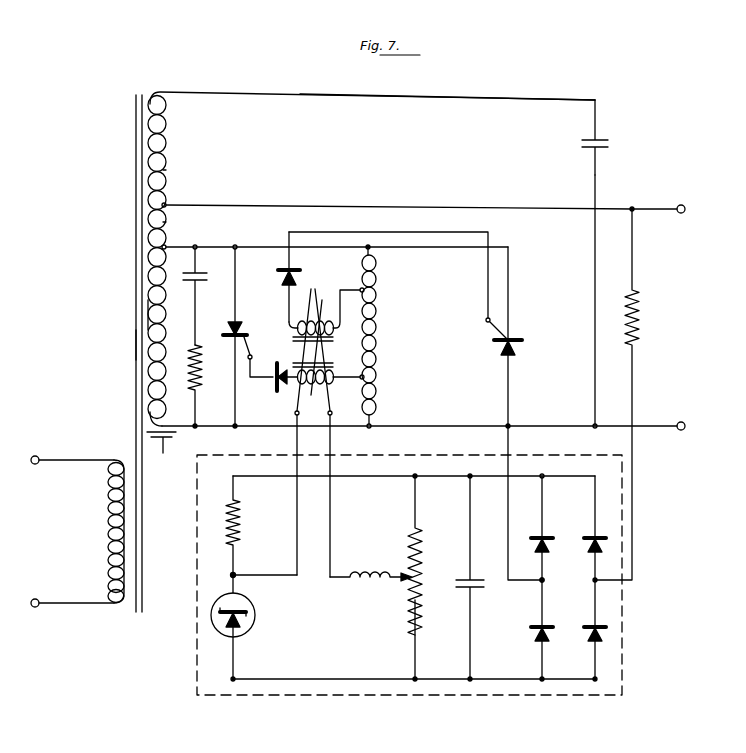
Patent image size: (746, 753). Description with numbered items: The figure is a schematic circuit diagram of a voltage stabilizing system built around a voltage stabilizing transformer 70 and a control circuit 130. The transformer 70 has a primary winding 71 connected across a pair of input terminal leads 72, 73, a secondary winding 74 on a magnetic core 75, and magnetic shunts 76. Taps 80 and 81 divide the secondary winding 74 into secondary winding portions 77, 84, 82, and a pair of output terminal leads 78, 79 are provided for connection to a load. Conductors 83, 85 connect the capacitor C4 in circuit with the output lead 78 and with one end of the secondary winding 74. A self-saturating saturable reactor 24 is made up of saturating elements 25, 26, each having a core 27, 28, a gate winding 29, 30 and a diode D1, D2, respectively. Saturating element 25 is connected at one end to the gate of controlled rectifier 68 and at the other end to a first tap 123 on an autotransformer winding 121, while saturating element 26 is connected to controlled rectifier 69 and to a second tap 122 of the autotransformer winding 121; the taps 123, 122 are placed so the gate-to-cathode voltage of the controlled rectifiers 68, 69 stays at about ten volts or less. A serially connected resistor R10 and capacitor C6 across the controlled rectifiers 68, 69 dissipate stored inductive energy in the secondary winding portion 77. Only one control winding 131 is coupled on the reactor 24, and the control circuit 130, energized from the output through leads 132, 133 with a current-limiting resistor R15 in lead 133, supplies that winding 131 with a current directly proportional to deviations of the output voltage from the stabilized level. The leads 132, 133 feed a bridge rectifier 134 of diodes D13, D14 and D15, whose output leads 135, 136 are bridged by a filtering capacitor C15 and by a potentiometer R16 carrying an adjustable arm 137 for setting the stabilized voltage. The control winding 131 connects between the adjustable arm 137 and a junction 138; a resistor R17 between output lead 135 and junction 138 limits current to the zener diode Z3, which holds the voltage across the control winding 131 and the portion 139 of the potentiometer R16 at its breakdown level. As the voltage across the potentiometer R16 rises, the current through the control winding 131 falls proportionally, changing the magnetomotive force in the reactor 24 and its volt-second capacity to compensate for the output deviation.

The voltage stabilizing transformer 70 is at (132, 181).
The secondary winding 74 is at (168, 149).
The secondary winding portion 82 is at (166, 170).
The tap 81 is at (168, 204).
The secondary winding portion 84 is at (166, 224).
The tap 80 is at (168, 246).
The conductor 83 is at (466, 101).
The output terminal lead 79 is at (612, 208).
The conductor 85 is at (593, 278).
The controlled rectifier 69 is at (512, 337).
The output terminal lead 78 is at (540, 425).
The lead 132 is at (510, 444).
The lead 133 is at (626, 462).
The magnetic core 75 is at (134, 346).
The secondary winding portion 77 is at (162, 332).
The controlled rectifier 68 is at (240, 330).
The saturating element 26 is at (305, 300).
The self-saturating saturable reactor 24 is at (312, 418).
The gate winding 30 is at (316, 312).
The second tap 122 is at (360, 292).
The autotransformer winding 121 is at (380, 320).
The core 28 is at (296, 341).
The core 27 is at (326, 366).
The saturating element 25 is at (268, 382).
The gate winding 29 is at (313, 438).
The first tap 123 is at (360, 379).
The control winding 131 is at (295, 418).
The input terminal lead 72 is at (50, 457).
The primary winding 71 is at (108, 533).
The input terminal lead 73 is at (54, 601).
The magnetic shunts 76 is at (161, 452).
The junction 138 is at (237, 573).
The adjustable arm 137 is at (390, 588).
The portion of the potentiometer 139 is at (390, 620).
The bridge output lead 135 is at (496, 478).
The bridge rectifier 134 is at (580, 581).
The bridge output lead 136 is at (500, 677).
The control circuit 130 is at (624, 628).
The capacitor C4 is at (610, 145).
The capacitor C6 is at (201, 280).
The resistor R10 is at (202, 375).
The resistor R15 is at (641, 316).
The potentiometer R16 is at (424, 562).
The resistor R17 is at (243, 524).
The capacitor C15 is at (452, 580).
The diode D1 is at (279, 393).
The diode D2 is at (296, 268).
The diode D13 is at (545, 535).
The diode D14 is at (597, 535).
The diode D15 is at (545, 625).
The zener diode Z3 is at (256, 623).